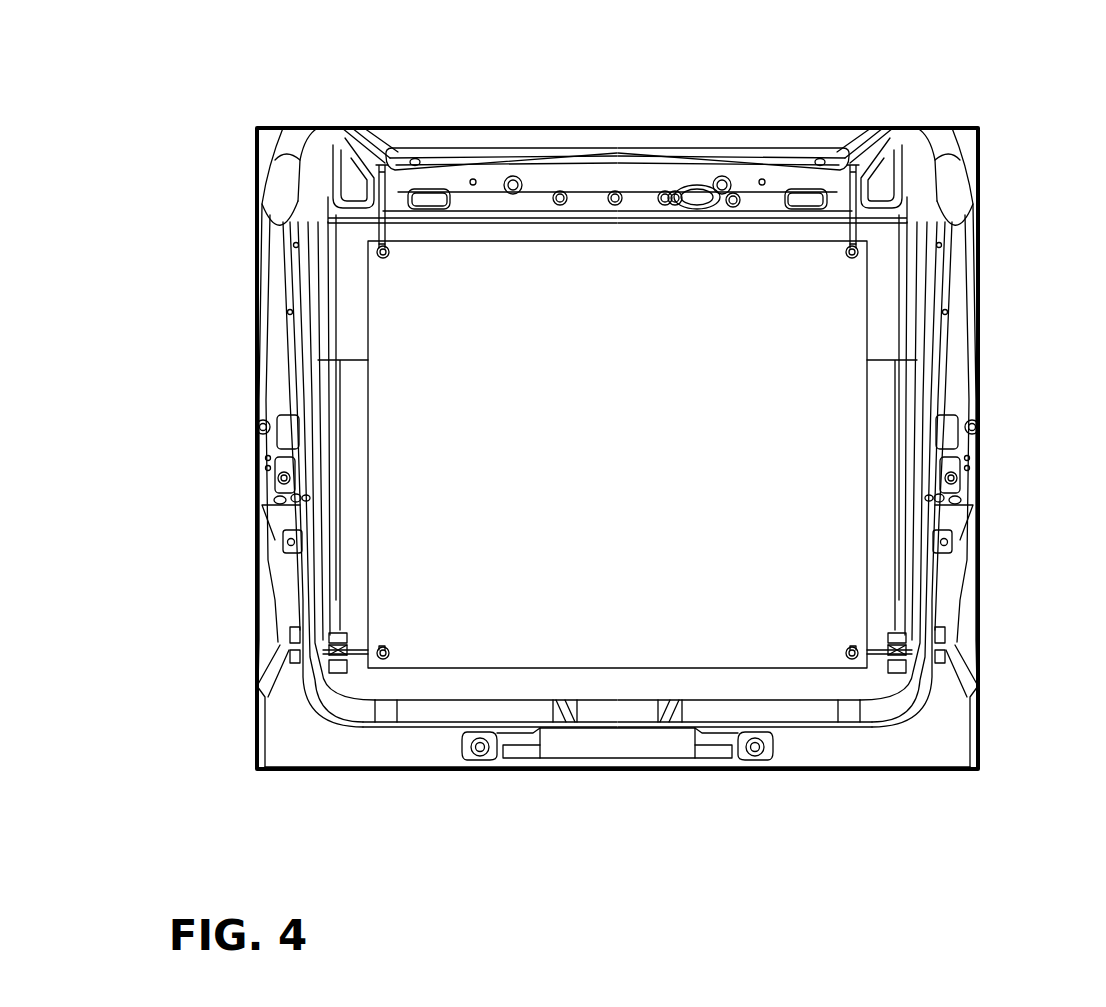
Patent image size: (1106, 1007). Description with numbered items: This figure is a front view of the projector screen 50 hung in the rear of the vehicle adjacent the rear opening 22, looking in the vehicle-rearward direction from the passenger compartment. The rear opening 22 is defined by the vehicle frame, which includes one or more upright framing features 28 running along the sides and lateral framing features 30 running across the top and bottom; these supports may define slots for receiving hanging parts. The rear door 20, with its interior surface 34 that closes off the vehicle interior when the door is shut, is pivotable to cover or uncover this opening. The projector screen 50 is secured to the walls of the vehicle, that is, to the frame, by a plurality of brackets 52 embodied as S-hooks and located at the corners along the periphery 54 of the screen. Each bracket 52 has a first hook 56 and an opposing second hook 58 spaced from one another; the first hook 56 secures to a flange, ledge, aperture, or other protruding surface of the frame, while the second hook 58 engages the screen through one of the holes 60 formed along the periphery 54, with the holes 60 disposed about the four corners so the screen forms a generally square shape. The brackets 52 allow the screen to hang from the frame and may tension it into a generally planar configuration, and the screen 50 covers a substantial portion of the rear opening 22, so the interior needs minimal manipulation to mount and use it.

The rear door 20 is at (290, 150).
The rear opening 22 is at (888, 418).
The upright framing feature 28 is at (345, 298).
The lateral framing feature 30 is at (622, 210).
The interior surface 34 is at (540, 148).
The projector screen 50 is at (835, 343).
The bracket 52 is at (410, 208).
The periphery 54 is at (866, 490).
The first hook 56 is at (385, 165).
The second hook 58 is at (387, 250).
The hole 60 is at (382, 258).